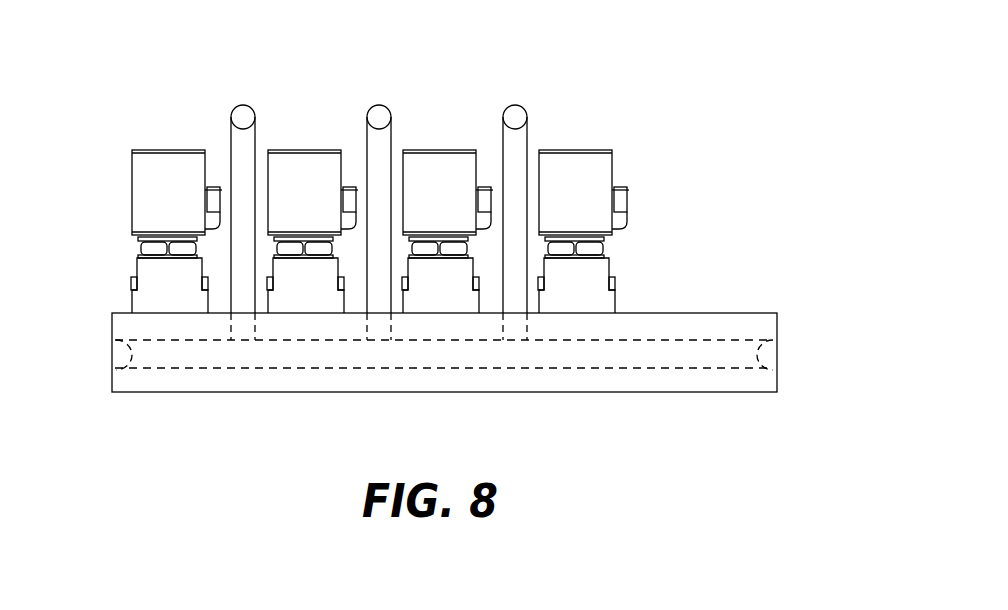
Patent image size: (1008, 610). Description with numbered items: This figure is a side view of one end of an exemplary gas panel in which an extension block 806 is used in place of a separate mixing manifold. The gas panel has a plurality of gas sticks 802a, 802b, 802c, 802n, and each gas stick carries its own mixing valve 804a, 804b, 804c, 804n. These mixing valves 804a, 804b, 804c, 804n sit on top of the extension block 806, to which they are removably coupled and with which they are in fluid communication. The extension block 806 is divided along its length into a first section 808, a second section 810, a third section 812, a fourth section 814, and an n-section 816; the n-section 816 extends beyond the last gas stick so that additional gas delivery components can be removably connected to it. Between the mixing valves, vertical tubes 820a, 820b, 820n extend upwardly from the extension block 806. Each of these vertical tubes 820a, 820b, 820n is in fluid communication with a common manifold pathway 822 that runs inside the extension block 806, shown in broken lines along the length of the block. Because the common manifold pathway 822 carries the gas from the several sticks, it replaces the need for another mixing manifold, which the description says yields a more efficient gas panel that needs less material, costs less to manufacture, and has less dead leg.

The gas stick 802a is at (168, 120).
The gas stick 802b is at (309, 120).
The gas stick 802c is at (445, 120).
The gas stick 802n is at (578, 120).
The mixing valve 804a is at (168, 192).
The mixing valve 804b is at (304, 192).
The mixing valve 804c is at (439, 192).
The mixing valve 804n is at (575, 192).
The vertical tube 820a is at (243, 105).
The vertical tube 820b is at (379, 105).
The vertical tube 820n is at (515, 105).
The first section 808 is at (180, 329).
The second section 810 is at (308, 329).
The third section 812 is at (441, 329).
The fourth section 814 is at (579, 329).
The n-section 816 is at (711, 329).
The extension block 806 is at (115, 358).
The common manifold pathway 822 is at (775, 358).